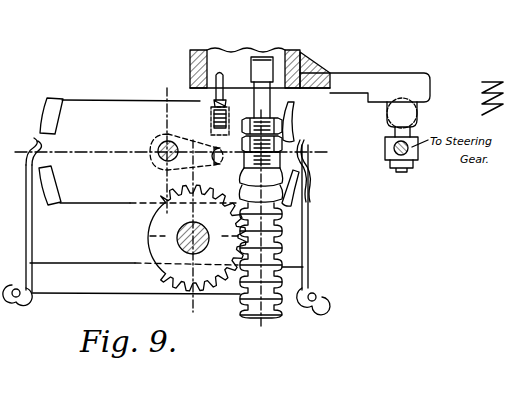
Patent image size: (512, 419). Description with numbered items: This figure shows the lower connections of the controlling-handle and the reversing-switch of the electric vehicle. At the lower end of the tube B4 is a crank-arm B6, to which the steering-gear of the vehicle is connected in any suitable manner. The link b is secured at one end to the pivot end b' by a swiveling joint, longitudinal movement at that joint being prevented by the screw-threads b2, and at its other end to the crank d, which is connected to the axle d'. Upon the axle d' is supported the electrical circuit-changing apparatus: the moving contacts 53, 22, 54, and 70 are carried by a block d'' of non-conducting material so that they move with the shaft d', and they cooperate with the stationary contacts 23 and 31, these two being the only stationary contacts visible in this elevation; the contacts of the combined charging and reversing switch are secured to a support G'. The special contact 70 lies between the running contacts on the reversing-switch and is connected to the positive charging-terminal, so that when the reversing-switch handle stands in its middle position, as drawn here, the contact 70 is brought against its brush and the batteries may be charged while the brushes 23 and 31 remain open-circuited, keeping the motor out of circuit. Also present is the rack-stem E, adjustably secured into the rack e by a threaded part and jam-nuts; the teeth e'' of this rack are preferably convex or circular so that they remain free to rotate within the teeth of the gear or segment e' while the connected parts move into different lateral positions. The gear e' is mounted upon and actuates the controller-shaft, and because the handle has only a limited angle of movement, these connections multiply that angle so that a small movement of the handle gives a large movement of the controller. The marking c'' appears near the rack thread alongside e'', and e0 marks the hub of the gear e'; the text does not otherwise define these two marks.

The stationary contact 31 is at (26, 246).
The running contact 53 is at (43, 120).
The block d'' is at (149, 151).
The support G' is at (166, 186).
The axle d' is at (155, 150).
The crank d is at (186, 149).
The link b is at (225, 84).
The screw-threads b2 is at (226, 104).
The pivot end b' is at (211, 121).
The tube B4 is at (245, 68).
The crank-arm B6 is at (357, 111).
The rack-stem E is at (262, 87).
The contact 22 is at (292, 125).
The contact 54 is at (301, 191).
The special contact 70 is at (300, 151).
The stationary contact 23 is at (308, 245).
The rack e is at (261, 269).
The teeth e'' is at (289, 224).
The worm thread c'' is at (288, 242).
The gear e' is at (197, 238).
The gear hub e0 is at (204, 239).